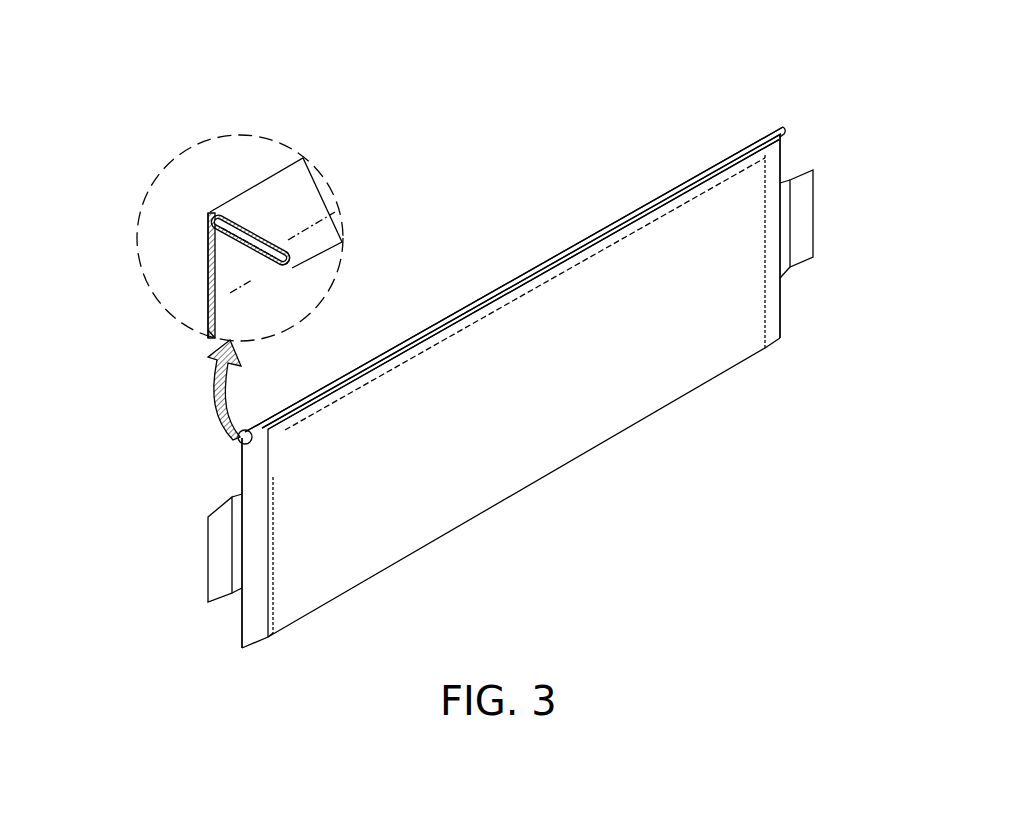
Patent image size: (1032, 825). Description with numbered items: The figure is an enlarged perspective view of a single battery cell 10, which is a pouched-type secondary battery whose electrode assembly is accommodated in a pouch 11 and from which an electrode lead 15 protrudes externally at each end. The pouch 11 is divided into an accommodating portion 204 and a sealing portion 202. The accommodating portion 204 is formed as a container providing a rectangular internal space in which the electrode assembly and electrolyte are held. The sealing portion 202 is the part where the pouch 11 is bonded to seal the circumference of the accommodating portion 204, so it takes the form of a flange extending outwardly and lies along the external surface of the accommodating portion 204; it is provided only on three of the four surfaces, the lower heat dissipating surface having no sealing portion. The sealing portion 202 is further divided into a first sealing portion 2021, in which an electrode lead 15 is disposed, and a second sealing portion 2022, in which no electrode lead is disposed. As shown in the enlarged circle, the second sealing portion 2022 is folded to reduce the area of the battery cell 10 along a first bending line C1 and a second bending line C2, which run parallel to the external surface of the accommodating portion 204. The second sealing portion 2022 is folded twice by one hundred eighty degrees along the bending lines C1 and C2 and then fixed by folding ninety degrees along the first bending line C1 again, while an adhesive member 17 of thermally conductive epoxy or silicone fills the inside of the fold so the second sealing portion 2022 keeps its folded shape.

The battery cell 10 is at (312, 31).
The pouch 11 is at (556, 438).
The electrode lead 15 is at (807, 232).
The adhesive member 17 is at (267, 268).
The sealing portion 202 is at (665, 70).
The first sealing portion 2021 is at (773, 153).
The second sealing portion 2022 is at (698, 177).
The accommodating portion 204 is at (533, 347).
The first bending line C1 is at (200, 242).
The second bending line C2 is at (204, 342).